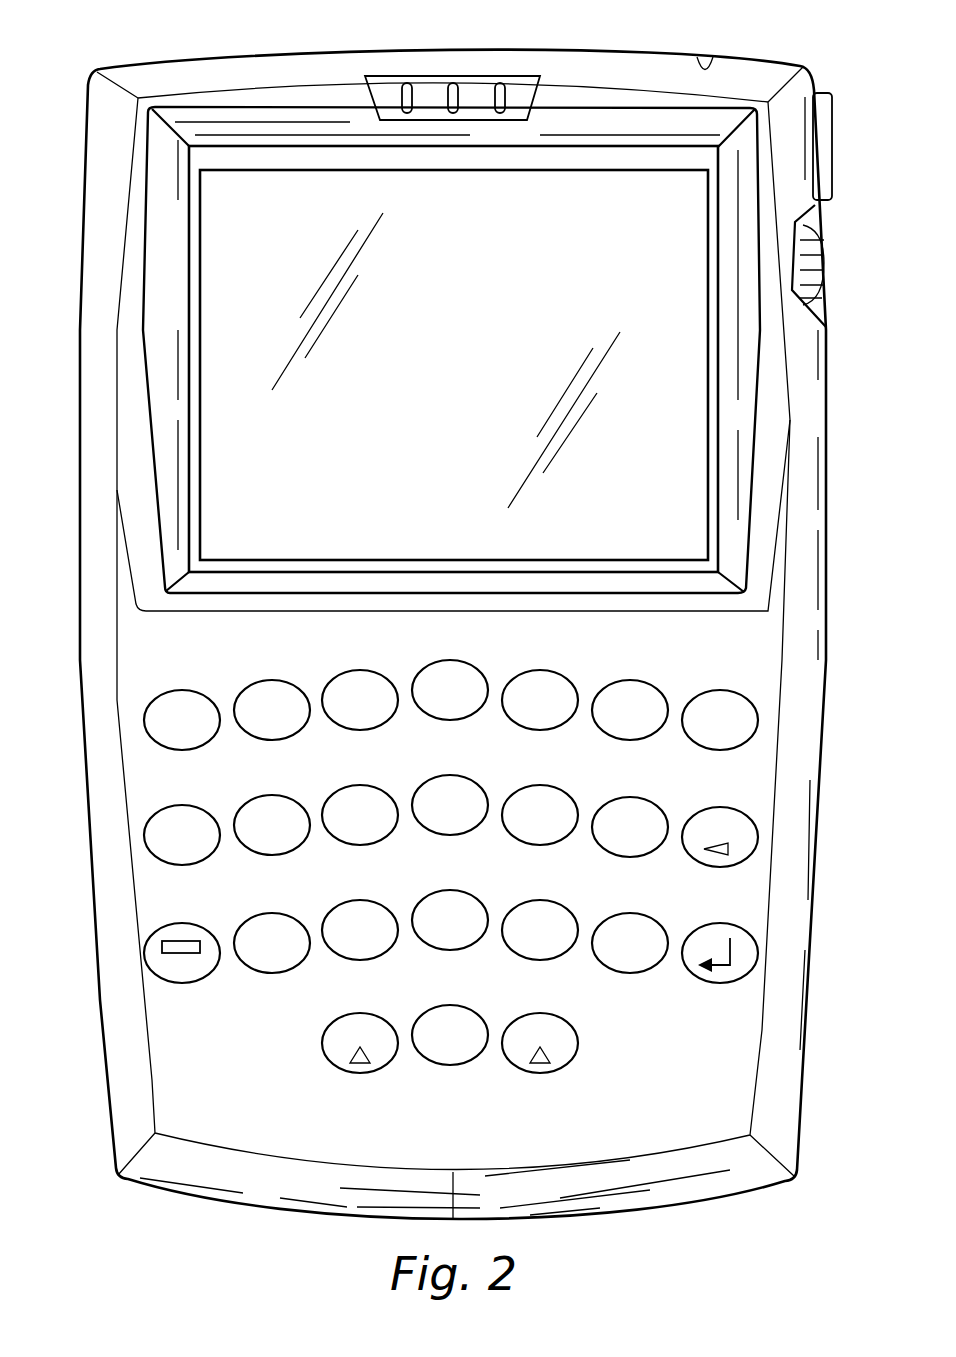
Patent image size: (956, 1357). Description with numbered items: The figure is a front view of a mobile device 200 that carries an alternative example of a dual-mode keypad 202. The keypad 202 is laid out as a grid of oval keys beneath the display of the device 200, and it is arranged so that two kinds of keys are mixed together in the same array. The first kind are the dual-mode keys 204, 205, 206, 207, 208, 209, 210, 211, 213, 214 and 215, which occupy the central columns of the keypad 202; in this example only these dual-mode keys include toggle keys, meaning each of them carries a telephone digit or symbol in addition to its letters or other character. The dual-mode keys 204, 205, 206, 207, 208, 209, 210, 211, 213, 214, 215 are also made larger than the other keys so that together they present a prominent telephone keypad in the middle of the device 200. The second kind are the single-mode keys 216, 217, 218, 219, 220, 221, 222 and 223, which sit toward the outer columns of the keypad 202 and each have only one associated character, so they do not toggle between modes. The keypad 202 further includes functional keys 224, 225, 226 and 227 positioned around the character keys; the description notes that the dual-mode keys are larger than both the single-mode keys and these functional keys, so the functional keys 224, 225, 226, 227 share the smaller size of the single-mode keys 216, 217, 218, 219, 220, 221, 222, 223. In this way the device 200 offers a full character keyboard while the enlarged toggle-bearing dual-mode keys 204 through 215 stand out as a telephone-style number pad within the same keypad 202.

The mobile device 200 is at (78, 98).
The dual-mode keypad 202 is at (165, 660).
The dual-mode key 204 is at (372, 730).
The dual-mode key 205 is at (460, 720).
The dual-mode key 206 is at (535, 730).
The dual-mode key 207 is at (370, 845).
The dual-mode key 208 is at (458, 835).
The dual-mode key 209 is at (535, 845).
The dual-mode key 210 is at (370, 960).
The dual-mode key 211 is at (458, 950).
The dual-mode key 213 is at (445, 1065).
The dual-mode key 214 is at (323, 1062).
The dual-mode key 215 is at (573, 1060).
The single-mode key 216 is at (190, 750).
The single-mode key 217 is at (282, 740).
The single-mode key 218 is at (622, 740).
The single-mode key 219 is at (708, 750).
The single-mode key 220 is at (190, 865).
The single-mode key 221 is at (282, 855).
The single-mode key 222 is at (622, 857).
The single-mode key 223 is at (282, 973).
The delete key 224 is at (710, 867).
The enter key 225 is at (710, 983).
The symbol key 226 is at (622, 973).
The function key 227 is at (190, 983).